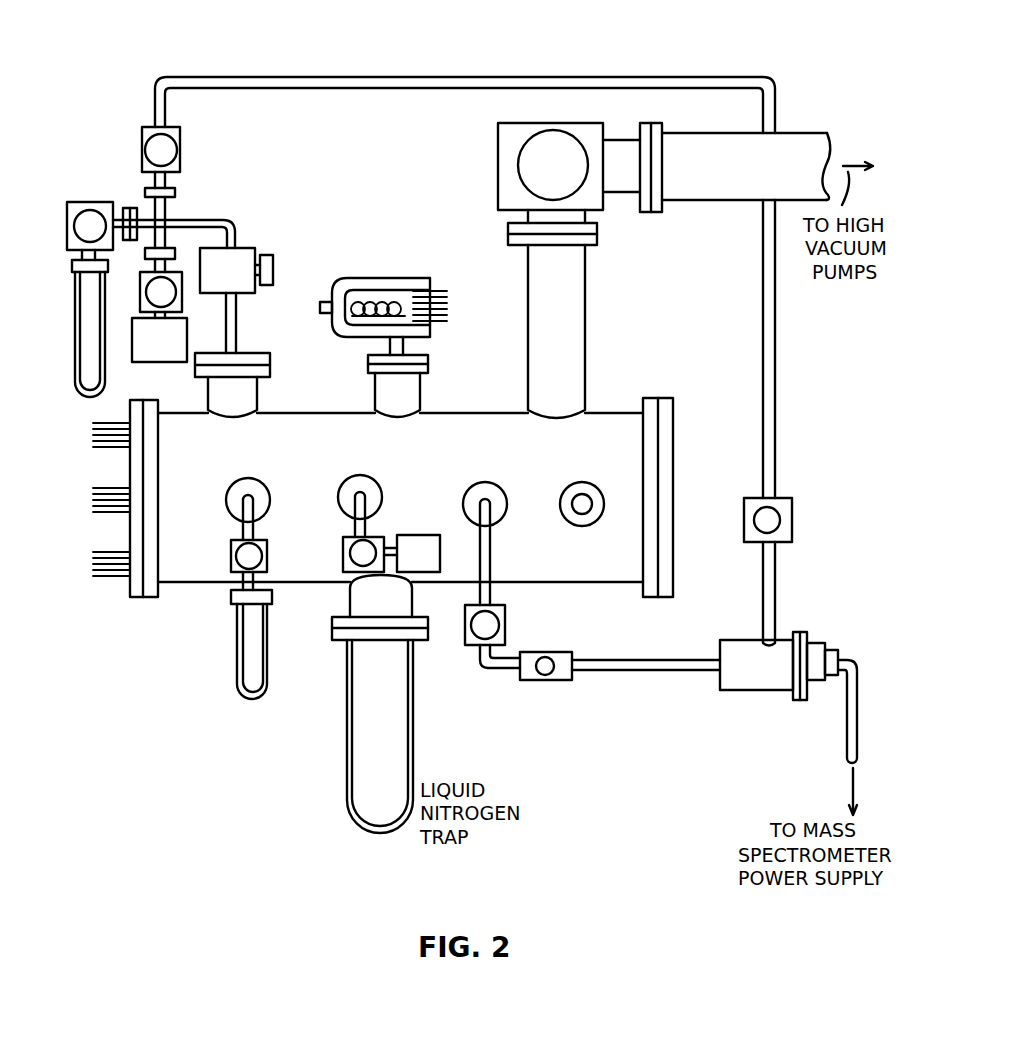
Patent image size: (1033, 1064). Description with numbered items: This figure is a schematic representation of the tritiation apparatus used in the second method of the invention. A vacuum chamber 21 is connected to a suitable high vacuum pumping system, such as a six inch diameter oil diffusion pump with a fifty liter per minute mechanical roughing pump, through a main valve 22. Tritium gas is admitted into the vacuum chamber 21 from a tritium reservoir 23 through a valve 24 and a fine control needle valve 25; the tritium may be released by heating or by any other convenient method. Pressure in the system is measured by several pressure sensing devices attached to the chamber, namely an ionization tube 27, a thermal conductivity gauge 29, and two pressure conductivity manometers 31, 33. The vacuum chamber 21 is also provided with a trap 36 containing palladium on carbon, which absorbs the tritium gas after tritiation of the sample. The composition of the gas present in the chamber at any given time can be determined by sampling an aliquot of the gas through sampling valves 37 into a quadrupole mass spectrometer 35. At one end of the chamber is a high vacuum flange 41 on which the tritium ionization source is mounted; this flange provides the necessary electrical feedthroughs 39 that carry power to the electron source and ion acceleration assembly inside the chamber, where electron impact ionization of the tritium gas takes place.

The vacuum chamber 21 is at (601, 412).
The main valve 22 is at (498, 152).
The tritium reservoir 23 is at (78, 350).
The valve 24 is at (78, 202).
The fine control needle valve 25 is at (243, 247).
The ionization tube 27 is at (368, 278).
The thermal conductivity gauge 29 is at (572, 487).
The pressure conductivity manometer 31 is at (153, 350).
The pressure conductivity manometer 33 is at (418, 537).
The quadrupole mass spectrometer 35 is at (744, 640).
The trap 36 is at (243, 658).
The sampling valves 37 is at (561, 652).
The electrical feedthroughs 39 is at (108, 488).
The high vacuum flange 41 is at (148, 598).